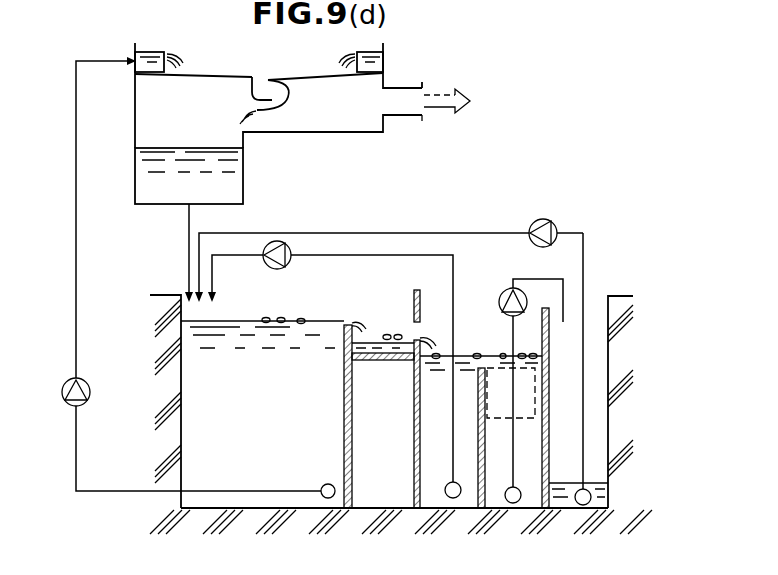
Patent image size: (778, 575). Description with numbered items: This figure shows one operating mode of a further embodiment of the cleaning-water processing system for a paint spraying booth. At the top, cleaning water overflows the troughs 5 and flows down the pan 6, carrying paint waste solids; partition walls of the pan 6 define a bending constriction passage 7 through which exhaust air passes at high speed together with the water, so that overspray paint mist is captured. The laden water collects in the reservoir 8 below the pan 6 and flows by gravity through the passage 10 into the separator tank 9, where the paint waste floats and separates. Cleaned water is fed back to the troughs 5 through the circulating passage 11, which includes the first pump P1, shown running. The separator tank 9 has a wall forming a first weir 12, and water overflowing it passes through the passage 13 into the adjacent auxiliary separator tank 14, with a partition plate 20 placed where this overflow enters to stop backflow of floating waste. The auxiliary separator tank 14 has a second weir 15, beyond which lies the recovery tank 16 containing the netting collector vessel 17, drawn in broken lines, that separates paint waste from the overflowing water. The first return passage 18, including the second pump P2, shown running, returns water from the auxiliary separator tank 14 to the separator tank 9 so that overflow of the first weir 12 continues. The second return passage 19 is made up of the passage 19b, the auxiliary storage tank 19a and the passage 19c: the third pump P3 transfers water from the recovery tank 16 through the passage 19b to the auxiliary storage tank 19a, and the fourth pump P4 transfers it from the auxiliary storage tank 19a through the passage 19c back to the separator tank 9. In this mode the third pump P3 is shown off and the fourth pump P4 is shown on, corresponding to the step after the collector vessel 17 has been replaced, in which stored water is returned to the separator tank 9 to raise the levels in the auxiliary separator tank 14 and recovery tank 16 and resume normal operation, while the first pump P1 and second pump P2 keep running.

The troughs 5 is at (152, 77).
The pan 6 is at (207, 78).
The bending constriction passage 7 is at (296, 100).
The reservoir 8 is at (135, 172).
The separator tank 9 is at (203, 443).
The passage 10 is at (187, 251).
The circulating passage 11 is at (75, 262).
The first weir 12 is at (344, 337).
The passage 13 is at (377, 350).
The auxiliary separator tank 14 is at (434, 465).
The second weir 15 is at (478, 400).
The recovery tank 16 is at (498, 512).
The collector vessel 17 is at (537, 398).
The first return passage 18 is at (412, 255).
The second return passage 19 is at (600, 241).
The auxiliary storage tank 19a is at (600, 434).
The passage 19b is at (563, 287).
The passage 19c is at (470, 233).
The partition plate 20 is at (414, 298).
The first pump P1 is at (63, 401).
The second pump P2 is at (290, 268).
The third pump P3 is at (503, 291).
The fourth pump P4 is at (556, 226).